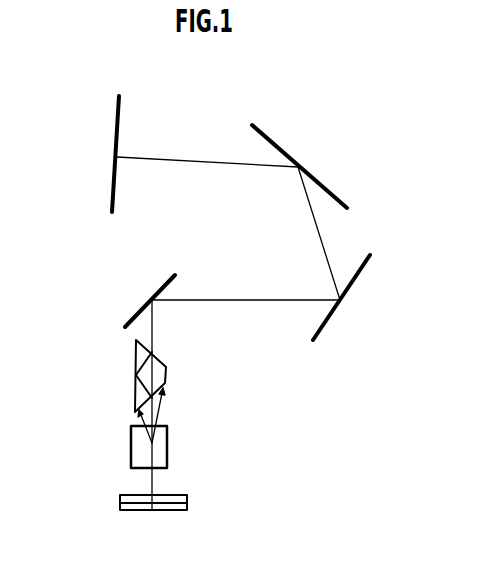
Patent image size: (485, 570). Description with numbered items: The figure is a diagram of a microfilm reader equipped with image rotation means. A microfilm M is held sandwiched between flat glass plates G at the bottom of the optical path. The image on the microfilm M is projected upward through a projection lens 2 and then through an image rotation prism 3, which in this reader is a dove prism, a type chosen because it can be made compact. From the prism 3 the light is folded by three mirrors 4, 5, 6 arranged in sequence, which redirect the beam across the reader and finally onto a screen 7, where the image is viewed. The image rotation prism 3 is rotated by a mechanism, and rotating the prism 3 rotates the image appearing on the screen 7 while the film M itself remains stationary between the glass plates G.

The projection lens 2 is at (167, 438).
The image rotation prism 3 is at (167, 372).
The mirror 4 is at (157, 288).
The mirror 5 is at (365, 267).
The mirror 6 is at (323, 182).
The screen 7 is at (112, 180).
The flat glass plates G is at (115, 494).
The microfilm M is at (187, 500).